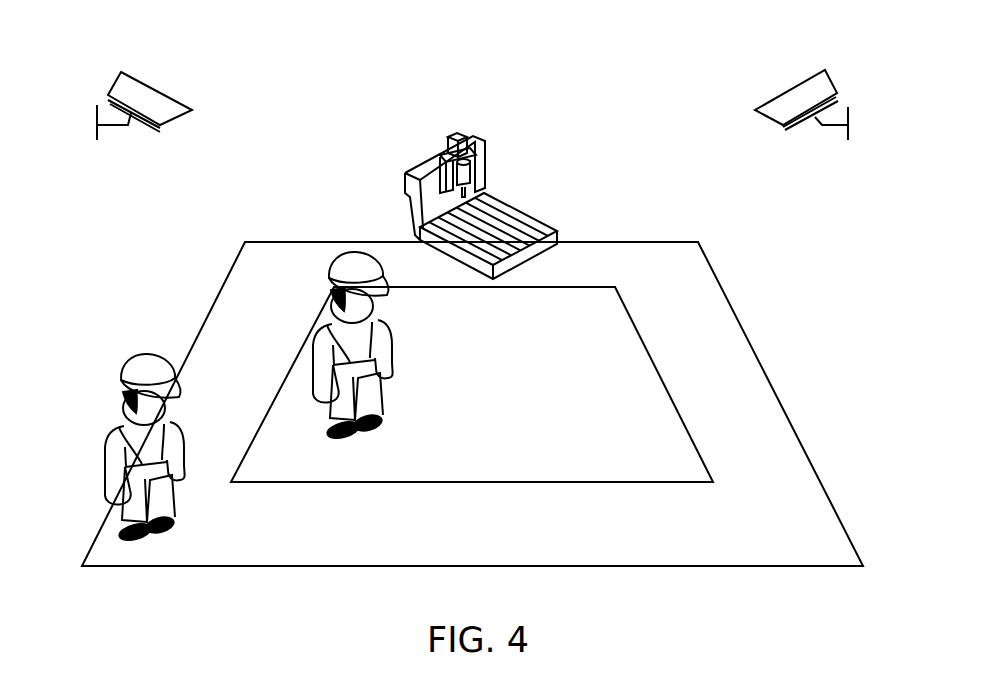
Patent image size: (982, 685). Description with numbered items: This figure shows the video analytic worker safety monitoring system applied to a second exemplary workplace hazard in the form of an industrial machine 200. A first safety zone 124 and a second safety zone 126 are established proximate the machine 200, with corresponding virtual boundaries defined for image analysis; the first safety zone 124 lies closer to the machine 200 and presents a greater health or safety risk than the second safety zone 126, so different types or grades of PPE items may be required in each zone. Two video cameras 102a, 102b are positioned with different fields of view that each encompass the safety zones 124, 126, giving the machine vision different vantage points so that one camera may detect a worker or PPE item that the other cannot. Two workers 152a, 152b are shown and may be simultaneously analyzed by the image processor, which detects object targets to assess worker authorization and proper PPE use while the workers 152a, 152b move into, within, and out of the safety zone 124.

The video camera 102a is at (790, 88).
The video camera 102b is at (157, 85).
The first safety zone 124 is at (268, 405).
The second safety zone 126 is at (742, 322).
The worker 152a is at (352, 253).
The worker 152b is at (147, 353).
The industrial machine 200 is at (427, 157).